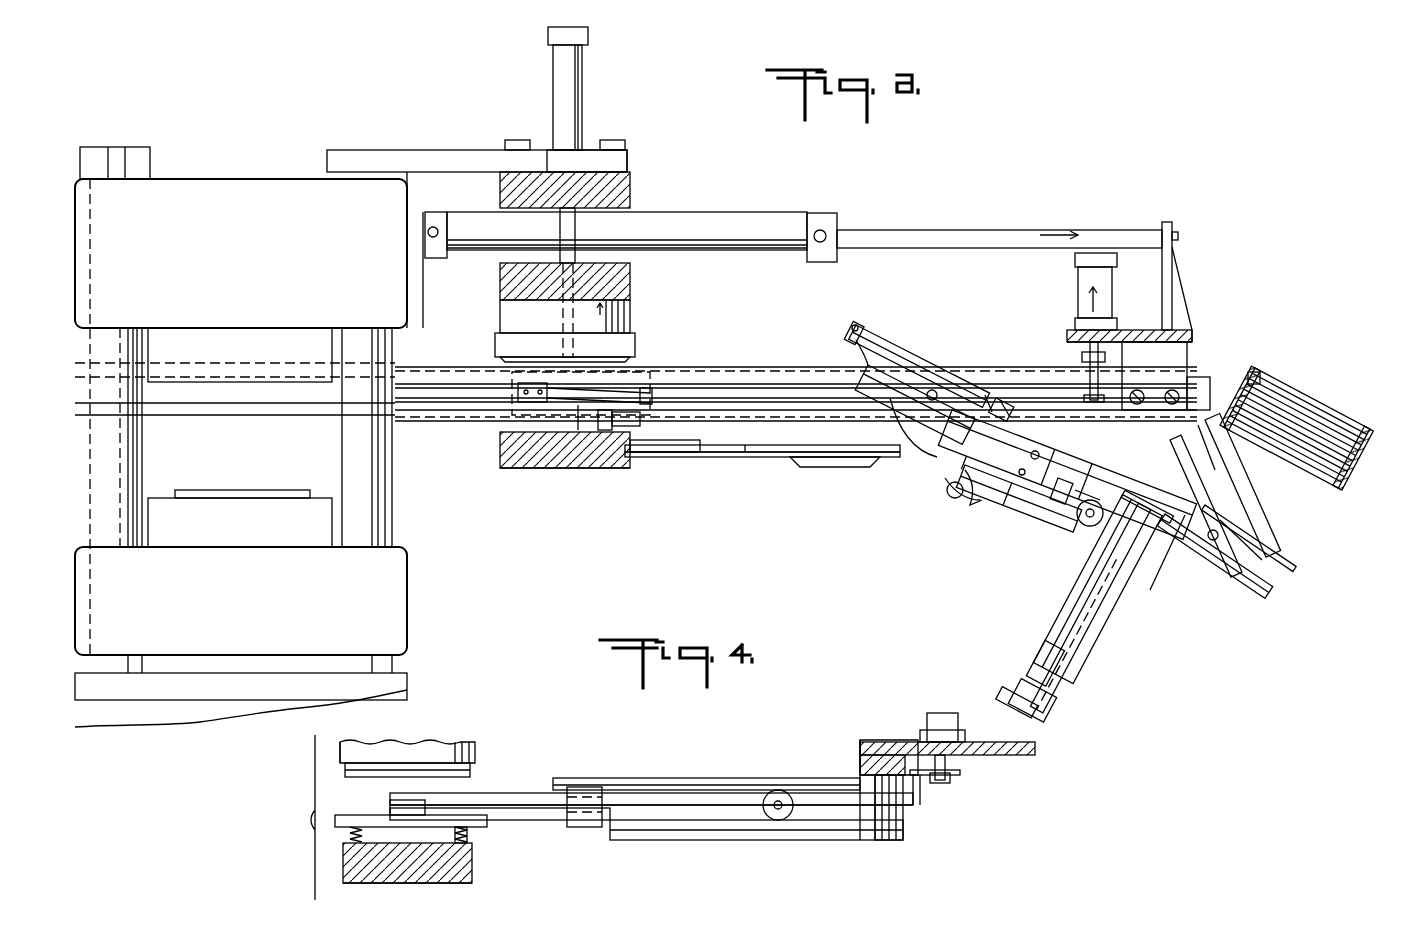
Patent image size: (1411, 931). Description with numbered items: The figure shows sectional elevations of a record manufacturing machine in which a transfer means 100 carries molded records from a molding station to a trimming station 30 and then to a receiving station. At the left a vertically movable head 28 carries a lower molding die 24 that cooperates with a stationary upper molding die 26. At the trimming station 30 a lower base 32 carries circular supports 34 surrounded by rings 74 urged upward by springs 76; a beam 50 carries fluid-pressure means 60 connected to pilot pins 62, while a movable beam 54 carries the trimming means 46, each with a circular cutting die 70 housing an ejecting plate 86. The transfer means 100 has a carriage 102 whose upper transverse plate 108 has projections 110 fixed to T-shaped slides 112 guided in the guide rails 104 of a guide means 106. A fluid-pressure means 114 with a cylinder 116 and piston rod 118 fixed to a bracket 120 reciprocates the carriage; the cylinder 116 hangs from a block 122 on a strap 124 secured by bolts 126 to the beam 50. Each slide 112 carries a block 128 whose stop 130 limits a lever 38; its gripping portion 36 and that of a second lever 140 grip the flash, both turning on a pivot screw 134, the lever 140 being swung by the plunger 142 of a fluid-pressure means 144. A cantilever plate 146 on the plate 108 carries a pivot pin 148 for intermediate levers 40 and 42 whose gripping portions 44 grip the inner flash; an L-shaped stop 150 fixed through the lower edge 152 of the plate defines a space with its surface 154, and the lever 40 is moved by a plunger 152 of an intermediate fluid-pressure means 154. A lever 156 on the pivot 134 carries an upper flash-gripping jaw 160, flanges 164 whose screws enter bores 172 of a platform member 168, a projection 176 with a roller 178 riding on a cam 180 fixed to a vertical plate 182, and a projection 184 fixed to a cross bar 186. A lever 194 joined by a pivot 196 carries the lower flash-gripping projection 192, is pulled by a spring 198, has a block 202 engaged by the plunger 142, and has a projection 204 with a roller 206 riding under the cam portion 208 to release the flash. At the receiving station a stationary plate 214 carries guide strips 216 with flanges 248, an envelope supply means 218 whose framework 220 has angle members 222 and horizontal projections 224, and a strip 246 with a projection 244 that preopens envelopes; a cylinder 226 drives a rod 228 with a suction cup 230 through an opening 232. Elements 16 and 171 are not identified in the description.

In FIG. 4, the spring 16 is at (468, 840).
In FIG. 3, the lower molding die 24 is at (255, 495).
In FIG. 4, the lower molding die 24 is at (390, 850).
In FIG. 3, the stationary upper molding die 26 is at (250, 370).
In FIG. 3, the vertically movable head 28 is at (248, 603).
In FIG. 3, the trimming station 30 is at (489, 492).
In FIG. 4, the trimming station 30 is at (448, 710).
In FIG. 3, the lower base 32 is at (505, 457).
In FIG. 4, the lower base 32 is at (468, 878).
In FIG. 3, the lower circular support 34 is at (604, 435).
In FIG. 3, the gripping portion 36 is at (590, 387).
In FIG. 3, the lever 38 is at (710, 448).
In FIG. 4, the intermediate lever 40 is at (520, 780).
In FIG. 4, the intermediate lever 42 is at (520, 818).
In FIG. 4, the gripping portion 44 is at (390, 803).
In FIG. 3, the trimming means 46 is at (640, 312).
In FIG. 4, the trimming means 46 is at (471, 741).
In FIG. 3, the beam 50 is at (630, 186).
In FIG. 3, the movable beam 54 is at (500, 295).
In FIG. 3, the fluid-pressure means 60 is at (578, 87).
In FIG. 3, the pilot pin 62 is at (575, 233).
In FIG. 3, the circular cutting die 70 is at (515, 343).
In FIG. 3, the ring 74 is at (642, 452).
In FIG. 4, the ring 74 is at (335, 822).
In FIG. 3, the spring 76 is at (628, 430).
In FIG. 4, the spring 76 is at (335, 843).
In FIG. 4, the ejecting means 86 is at (470, 772).
In FIG. 3, the transfer means 100 is at (1203, 295).
In FIG. 3, the carriage 102 is at (1130, 328).
In FIG. 4, the carriage 102 is at (1035, 753).
In FIG. 3, the guide rail 104 is at (1184, 374).
In FIG. 3, the guide means 106 is at (736, 352).
In FIG. 3, the upper transverse plate 108 is at (1187, 332).
In FIG. 4, the upper transverse plate 108 is at (969, 796).
In FIG. 3, the downwardly extending projection 110 is at (1182, 353).
In FIG. 3, the elongated slide 112 is at (510, 413).
In FIG. 3, the fluid-pressure means 114 is at (770, 190).
In FIG. 3, the cylinder 116 is at (775, 250).
In FIG. 3, the piston rod 118 is at (875, 226).
In FIG. 3, the bracket 120 is at (1176, 270).
In FIG. 3, the block 122 is at (410, 301).
In FIG. 3, the strap 124 is at (440, 132).
In FIG. 3, the bolt 126 is at (525, 130).
In FIG. 3, the block 128 is at (516, 392).
In FIG. 3, the stop portion 130 is at (575, 430).
In FIG. 3, the pivot screw 134 is at (913, 365).
In FIG. 3, the second lever 140 is at (695, 367).
In FIG. 3, the plunger 142 is at (1160, 372).
In FIG. 3, the fluid-pressure means 144 is at (1078, 262).
In FIG. 4, the cantilever supporting plate 146 is at (857, 840).
In FIG. 4, the pivot pin 148 is at (785, 793).
In FIG. 4, the stop member 150 is at (587, 787).
In FIG. 4, the plunger 152 is at (580, 827).
In FIG. 4, the intermediate fluid-pressure means 154 is at (810, 833).
In FIG. 3, the lever 156 is at (1128, 432).
In FIG. 3, the upper flash-gripping jaw 160 is at (870, 352).
In FIG. 3, the upwardly extending flange 164 is at (863, 323).
In FIG. 3, the platform member 168 is at (938, 382).
In FIG. 3, the tip 171 is at (855, 325).
In FIG. 3, the aligned bore 172 is at (513, 318).
In FIG. 3, the downwardly extending projection 176 is at (965, 450).
In FIG. 3, the roller 178 is at (985, 470).
In FIG. 3, the cam 180 is at (760, 460).
In FIG. 3, the vertical plate 182 is at (738, 462).
In FIG. 3, the upwardly extending projection 184 is at (990, 400).
In FIG. 3, the cross bar 186 is at (990, 392).
In FIG. 3, the lower flash-gripping projection 192 is at (858, 420).
In FIG. 3, the lever 194 is at (1060, 490).
In FIG. 3, the pivot 196 is at (1102, 515).
In FIG. 3, the spring 198 is at (1030, 470).
In FIG. 3, the block 202 is at (1083, 515).
In FIG. 3, the downwardly extending projection 204 is at (965, 500).
In FIG. 3, the roller 206 is at (945, 500).
In FIG. 3, the projecting portion 208 is at (820, 468).
In FIG. 3, the stationary plate 214 is at (1285, 594).
In FIG. 3, the guide strip 216 is at (930, 445).
In FIG. 3, the envelope supply means 218 is at (1289, 384).
In FIG. 3, the framework 220 is at (1262, 504).
In FIG. 3, the angle member 222 is at (1257, 372).
In FIG. 3, the horizontal projection 224 is at (1310, 492).
In FIG. 3, the cylinder 226 is at (1071, 587).
In FIG. 3, the elongated rod 228 is at (1030, 650).
In FIG. 3, the suction cup 230 is at (1220, 520).
In FIG. 3, the opening 232 is at (1180, 566).
In FIG. 3, the projection 244 is at (1175, 442).
In FIG. 3, the strip 246 is at (1230, 524).
In FIG. 3, the flange 248 is at (1168, 440).